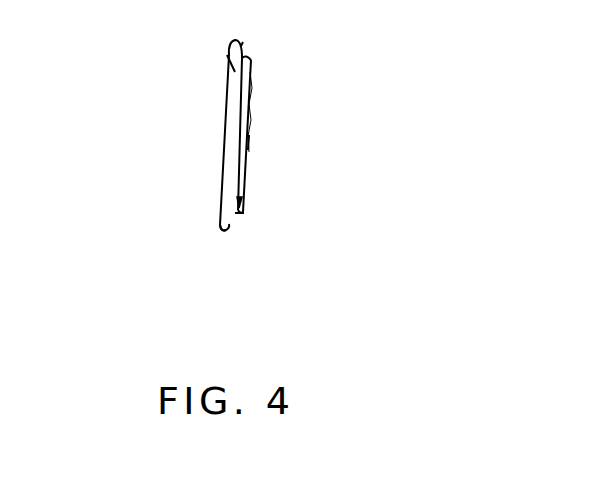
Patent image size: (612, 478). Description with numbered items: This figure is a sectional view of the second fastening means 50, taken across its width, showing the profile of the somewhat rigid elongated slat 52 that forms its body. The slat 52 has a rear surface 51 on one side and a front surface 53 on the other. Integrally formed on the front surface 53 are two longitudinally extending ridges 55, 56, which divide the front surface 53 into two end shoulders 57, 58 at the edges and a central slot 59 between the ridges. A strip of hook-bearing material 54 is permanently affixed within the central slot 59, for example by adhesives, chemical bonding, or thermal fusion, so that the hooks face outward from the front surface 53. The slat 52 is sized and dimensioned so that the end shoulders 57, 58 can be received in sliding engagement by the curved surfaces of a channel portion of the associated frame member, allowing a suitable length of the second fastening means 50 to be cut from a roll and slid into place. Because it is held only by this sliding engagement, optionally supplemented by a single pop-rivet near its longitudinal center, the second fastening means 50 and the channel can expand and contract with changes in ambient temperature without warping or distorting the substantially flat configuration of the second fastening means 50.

The second fastening means 50 is at (241, 159).
The rear surface 51 is at (227, 138).
The elongated slat 52 is at (227, 55).
The front surface 53 is at (244, 200).
The strip of hook-bearing material 54 is at (247, 140).
The ridge 55 is at (250, 59).
The ridge 56 is at (243, 216).
The end shoulder 57 is at (243, 44).
The end shoulder 58 is at (229, 226).
The central slot 59 is at (247, 118).